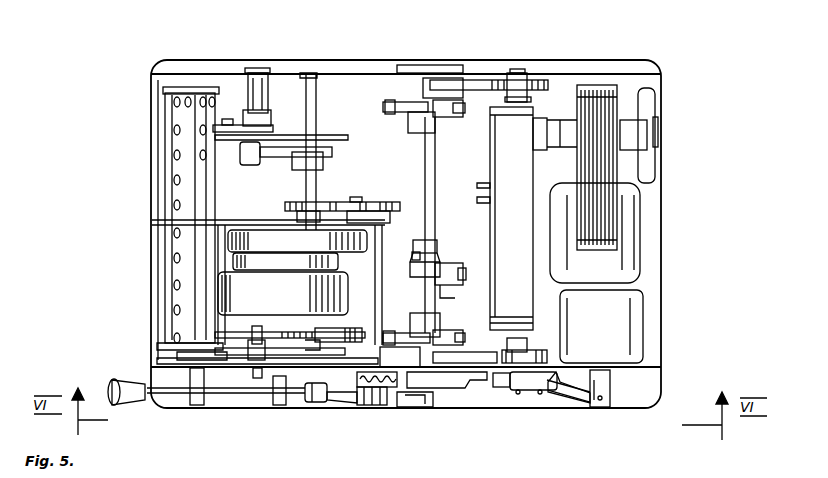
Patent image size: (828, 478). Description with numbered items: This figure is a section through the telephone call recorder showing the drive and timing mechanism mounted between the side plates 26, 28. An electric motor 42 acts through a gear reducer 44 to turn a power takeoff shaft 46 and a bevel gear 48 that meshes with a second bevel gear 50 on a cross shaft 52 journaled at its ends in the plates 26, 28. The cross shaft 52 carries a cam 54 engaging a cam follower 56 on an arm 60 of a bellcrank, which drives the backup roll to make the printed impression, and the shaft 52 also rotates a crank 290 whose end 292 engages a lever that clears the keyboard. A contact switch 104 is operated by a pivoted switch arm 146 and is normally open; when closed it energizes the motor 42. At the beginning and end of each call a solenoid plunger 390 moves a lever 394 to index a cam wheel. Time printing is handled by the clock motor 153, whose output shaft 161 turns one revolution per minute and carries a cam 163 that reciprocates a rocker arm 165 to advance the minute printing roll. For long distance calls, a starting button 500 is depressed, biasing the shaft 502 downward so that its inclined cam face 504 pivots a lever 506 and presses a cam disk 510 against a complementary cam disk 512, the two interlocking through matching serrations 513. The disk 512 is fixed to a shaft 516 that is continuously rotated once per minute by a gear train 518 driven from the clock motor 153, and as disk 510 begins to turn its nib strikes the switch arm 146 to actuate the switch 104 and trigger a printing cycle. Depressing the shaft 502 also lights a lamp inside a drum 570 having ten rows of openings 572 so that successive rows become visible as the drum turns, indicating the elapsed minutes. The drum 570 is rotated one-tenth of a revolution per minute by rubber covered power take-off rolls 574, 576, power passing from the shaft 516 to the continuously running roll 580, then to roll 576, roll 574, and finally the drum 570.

The side plate 26 is at (507, 390).
The side plate 28 is at (491, 72).
The electric motor 42 is at (628, 243).
The gear reducer 44 is at (518, 218).
The power takeoff shaft 46 is at (463, 265).
The bevel gear 48 is at (440, 296).
The second bevel gear 50 is at (412, 276).
The cross shaft 52 is at (430, 195).
The cam 54 is at (390, 102).
The cam follower 56 is at (452, 122).
The arm 60 is at (458, 78).
The contact switch 104 is at (530, 395).
The switch arm 146 is at (497, 388).
The clock motor 153 is at (300, 285).
The output shaft 161 is at (312, 183).
The cam 163 is at (273, 158).
The rocker arm 165 is at (250, 110).
The crank 290 is at (442, 388).
The end 292 is at (412, 407).
The plunger 390 is at (603, 407).
The lever 394 is at (568, 398).
The starting button 500 is at (136, 380).
The shaft 502 is at (246, 395).
The inclined cam face 504 is at (318, 402).
The lever 506 is at (350, 402).
The cam disk 510 is at (378, 405).
The complementary cam disk 512 is at (390, 367).
The serrations 513 is at (358, 375).
The shaft 516 is at (383, 256).
The gear train 518 is at (391, 200).
The drum 570 is at (168, 185).
The openings 572 is at (172, 148).
The power take-off roll 574 is at (207, 312).
The power take-off roll 576 is at (322, 332).
The continuously running roll 580 is at (310, 350).